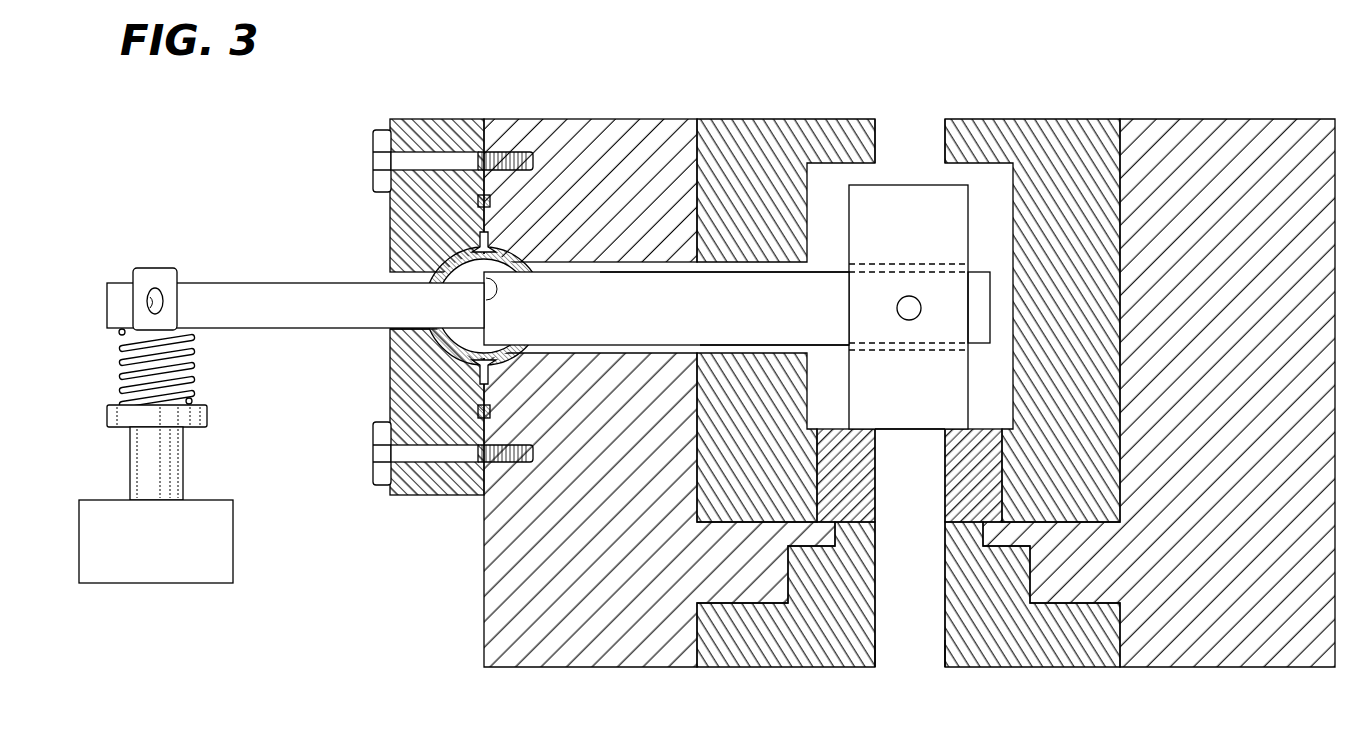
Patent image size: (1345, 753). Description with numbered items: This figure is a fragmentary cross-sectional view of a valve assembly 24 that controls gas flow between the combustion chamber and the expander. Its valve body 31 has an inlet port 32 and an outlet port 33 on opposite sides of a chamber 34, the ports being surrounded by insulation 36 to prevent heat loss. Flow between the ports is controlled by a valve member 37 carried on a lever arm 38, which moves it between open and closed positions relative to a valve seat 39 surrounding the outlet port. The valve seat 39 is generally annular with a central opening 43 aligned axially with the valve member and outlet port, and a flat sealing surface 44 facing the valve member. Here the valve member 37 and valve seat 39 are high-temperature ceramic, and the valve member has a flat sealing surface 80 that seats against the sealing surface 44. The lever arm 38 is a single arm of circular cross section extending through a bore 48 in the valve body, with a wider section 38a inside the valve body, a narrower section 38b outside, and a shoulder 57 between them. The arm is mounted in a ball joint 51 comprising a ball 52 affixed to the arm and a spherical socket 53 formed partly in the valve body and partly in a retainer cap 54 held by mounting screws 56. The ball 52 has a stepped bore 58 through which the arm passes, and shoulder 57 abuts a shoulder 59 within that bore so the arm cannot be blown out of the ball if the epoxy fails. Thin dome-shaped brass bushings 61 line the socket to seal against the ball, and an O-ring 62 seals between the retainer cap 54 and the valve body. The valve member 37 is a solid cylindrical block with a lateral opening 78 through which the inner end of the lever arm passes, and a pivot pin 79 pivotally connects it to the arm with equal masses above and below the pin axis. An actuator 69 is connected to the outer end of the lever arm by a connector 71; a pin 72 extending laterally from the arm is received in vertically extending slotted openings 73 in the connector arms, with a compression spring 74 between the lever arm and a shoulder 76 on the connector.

The valve assembly 24 is at (281, 208).
The valve body 31 is at (673, 130).
The inlet port 32 is at (937, 134).
The outlet port 33 is at (877, 653).
The chamber 34 is at (980, 238).
The insulation 36 is at (778, 118).
The valve member 37 is at (845, 349).
The lever arm 38 is at (635, 282).
The lever arm section inside valve body 38a is at (678, 329).
The lever arm section outside valve body 38b is at (317, 297).
The valve seat 39 is at (872, 508).
The central opening 43 is at (943, 516).
The flat sealing surface 44 is at (958, 428).
The bore 48 is at (748, 345).
The ball joint 51 is at (483, 360).
The ball 52 is at (390, 244).
The spherical socket 53 is at (501, 262).
The retainer cap 54 is at (427, 120).
The mounting screws 56 is at (372, 150).
The shoulder 57 is at (390, 377).
The stepped bore 58 is at (467, 377).
The shoulder 59 is at (390, 343).
The bushings 61 is at (390, 215).
The O-ring 62 is at (477, 195).
The actuator 69 is at (122, 513).
The connector 71 is at (177, 452).
The pin 72 is at (167, 307).
The slotted openings 73 is at (162, 293).
The compression spring 74 is at (197, 372).
The shoulder 76 is at (113, 405).
The lateral opening 78 is at (892, 347).
The pivot pin 79 is at (918, 307).
The flat sealing surface 80 is at (937, 432).